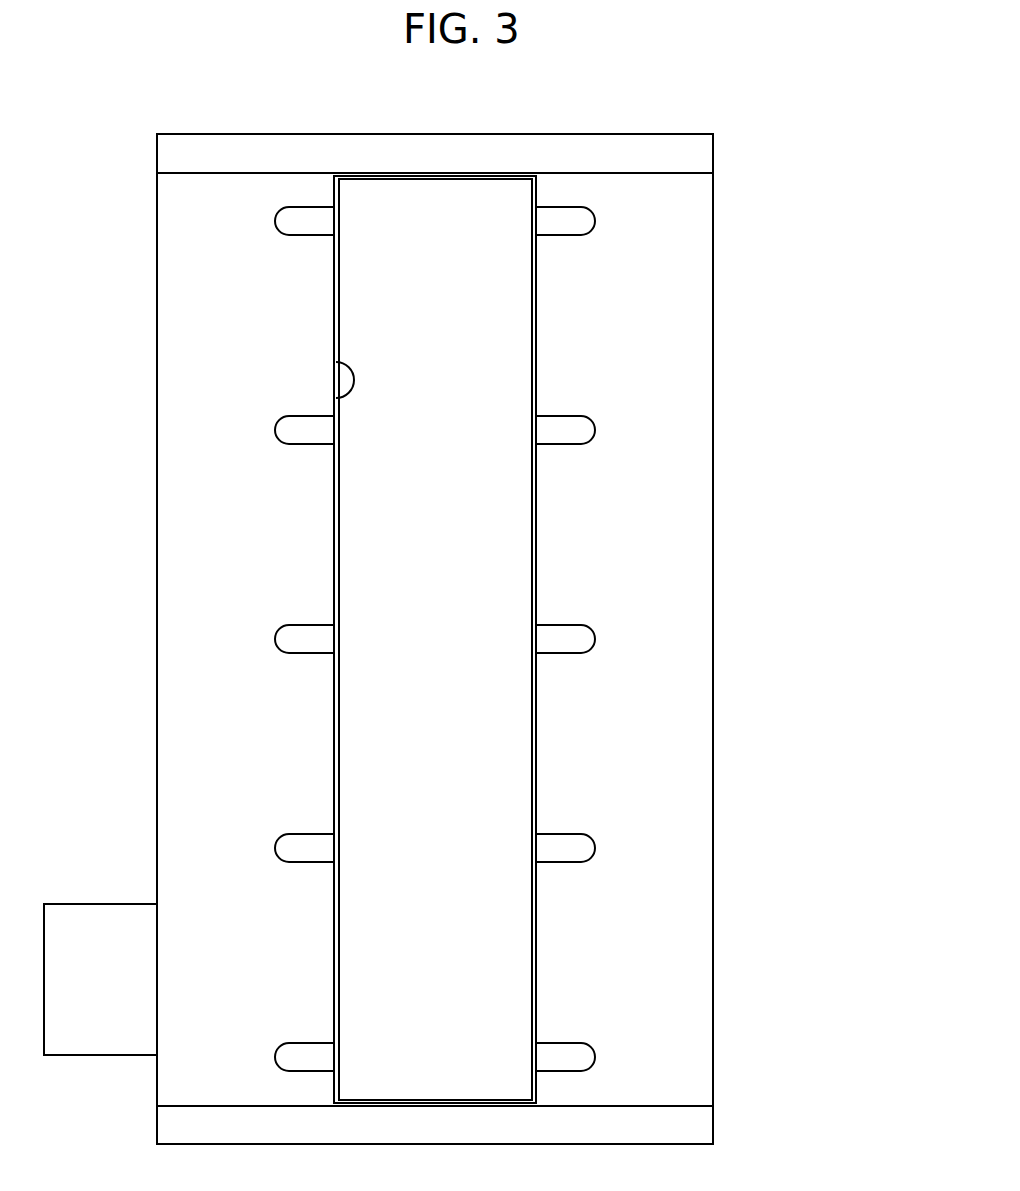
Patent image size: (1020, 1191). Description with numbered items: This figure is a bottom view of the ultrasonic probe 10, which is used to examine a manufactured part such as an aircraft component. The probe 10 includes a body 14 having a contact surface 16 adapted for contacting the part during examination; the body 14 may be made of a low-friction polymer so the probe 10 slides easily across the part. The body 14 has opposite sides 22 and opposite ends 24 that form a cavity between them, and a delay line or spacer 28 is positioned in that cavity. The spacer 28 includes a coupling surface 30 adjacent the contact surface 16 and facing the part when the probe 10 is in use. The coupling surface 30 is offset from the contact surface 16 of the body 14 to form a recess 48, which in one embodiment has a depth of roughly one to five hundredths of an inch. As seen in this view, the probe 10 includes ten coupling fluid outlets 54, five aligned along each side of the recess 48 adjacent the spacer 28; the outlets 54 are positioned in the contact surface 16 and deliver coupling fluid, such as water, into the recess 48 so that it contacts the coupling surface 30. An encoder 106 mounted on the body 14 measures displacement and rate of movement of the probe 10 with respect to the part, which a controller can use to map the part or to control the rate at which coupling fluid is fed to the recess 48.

The ultrasonic probe 10 is at (788, 406).
The body 14 is at (817, 1023).
The contact surface 16 is at (249, 789).
The opposite sides 22 is at (713, 1086).
The opposite ends 24 is at (713, 1128).
The spacer 28 is at (337, 322).
The coupling surface 30 is at (438, 651).
The recess 48 is at (334, 364).
The coupling fluid outlet 54 is at (562, 417).
The encoder 106 is at (132, 986).